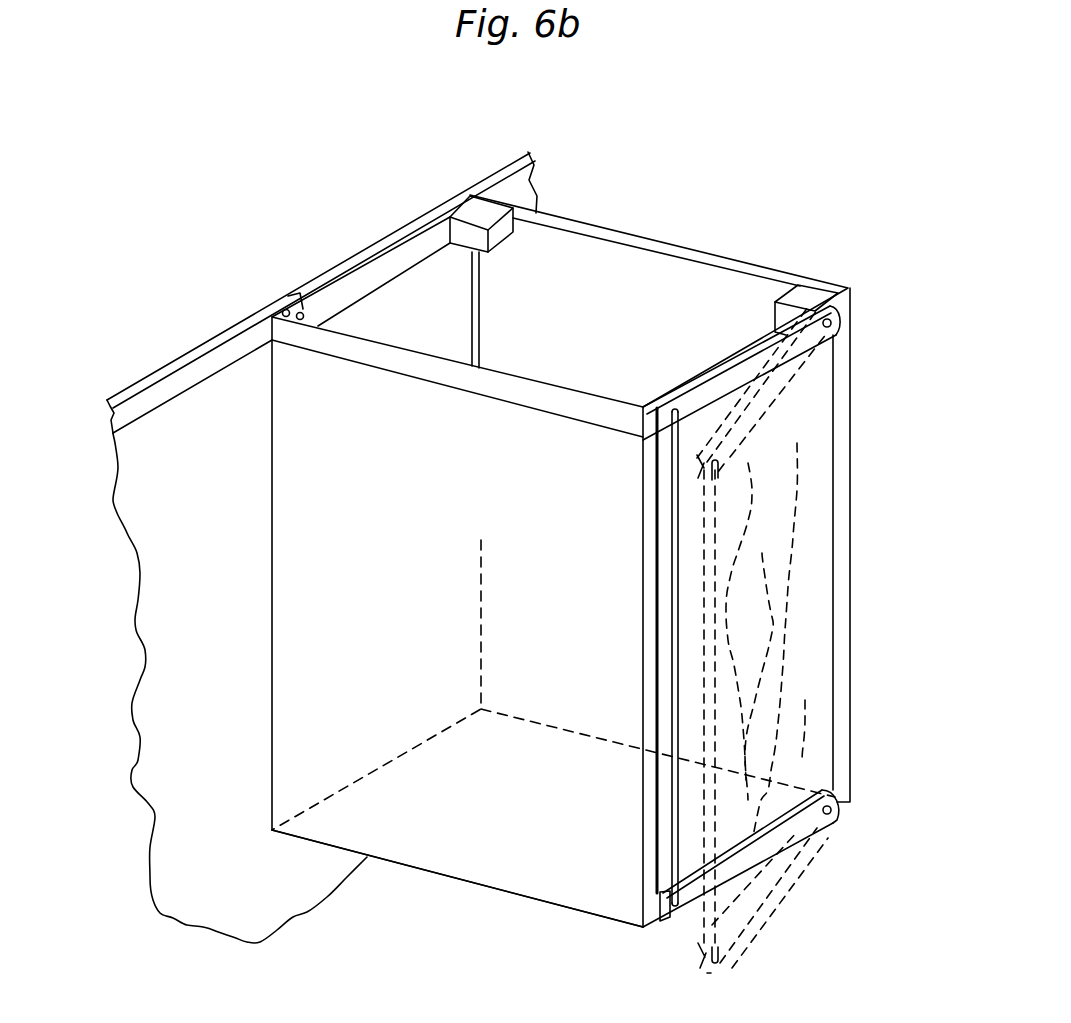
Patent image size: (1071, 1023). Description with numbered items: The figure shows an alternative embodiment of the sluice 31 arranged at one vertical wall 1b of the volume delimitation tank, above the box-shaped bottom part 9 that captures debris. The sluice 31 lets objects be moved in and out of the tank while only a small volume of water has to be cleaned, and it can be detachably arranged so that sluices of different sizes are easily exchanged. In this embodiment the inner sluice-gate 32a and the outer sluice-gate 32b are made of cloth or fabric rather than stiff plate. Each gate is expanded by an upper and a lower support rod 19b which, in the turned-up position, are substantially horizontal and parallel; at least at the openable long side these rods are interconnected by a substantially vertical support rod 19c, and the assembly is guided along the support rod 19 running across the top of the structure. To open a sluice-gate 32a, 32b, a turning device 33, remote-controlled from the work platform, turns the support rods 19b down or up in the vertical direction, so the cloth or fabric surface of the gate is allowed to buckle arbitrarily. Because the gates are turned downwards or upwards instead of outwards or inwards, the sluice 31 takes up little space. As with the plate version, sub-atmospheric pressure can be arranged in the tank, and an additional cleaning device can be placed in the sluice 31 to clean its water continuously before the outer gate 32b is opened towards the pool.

The vertical wall 1b is at (195, 833).
The support rod 19 is at (210, 360).
The upper and lower support rod 19b is at (387, 263).
The vertical support rod 19c is at (673, 625).
The inner sluice-gate 32a is at (445, 312).
The outer sluice-gate 32b is at (690, 683).
The turning device 33 is at (503, 225).
The box-shaped bottom part 9 is at (445, 832).
The sluice 31 is at (547, 880).